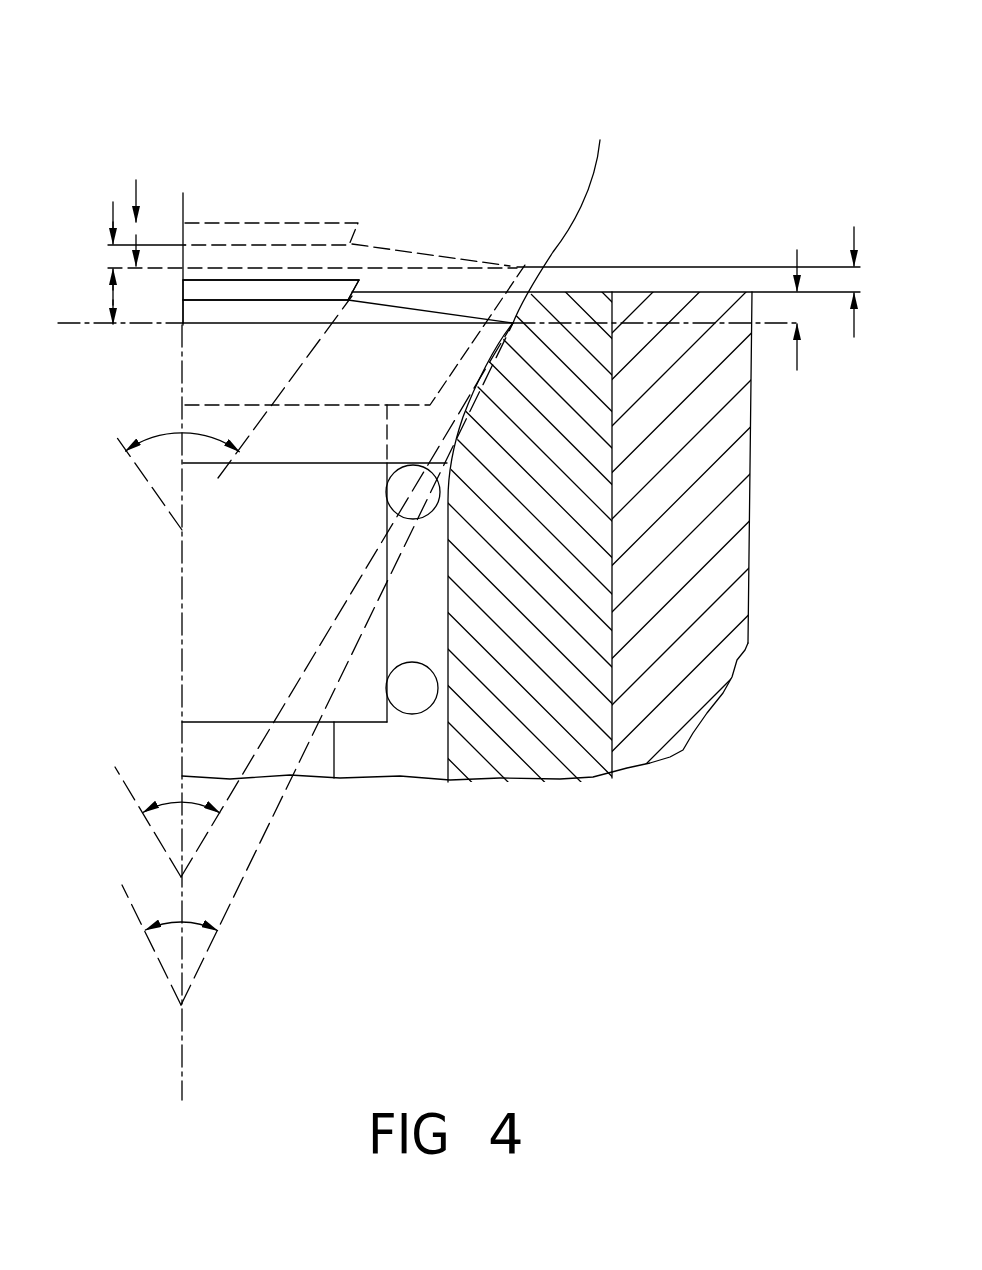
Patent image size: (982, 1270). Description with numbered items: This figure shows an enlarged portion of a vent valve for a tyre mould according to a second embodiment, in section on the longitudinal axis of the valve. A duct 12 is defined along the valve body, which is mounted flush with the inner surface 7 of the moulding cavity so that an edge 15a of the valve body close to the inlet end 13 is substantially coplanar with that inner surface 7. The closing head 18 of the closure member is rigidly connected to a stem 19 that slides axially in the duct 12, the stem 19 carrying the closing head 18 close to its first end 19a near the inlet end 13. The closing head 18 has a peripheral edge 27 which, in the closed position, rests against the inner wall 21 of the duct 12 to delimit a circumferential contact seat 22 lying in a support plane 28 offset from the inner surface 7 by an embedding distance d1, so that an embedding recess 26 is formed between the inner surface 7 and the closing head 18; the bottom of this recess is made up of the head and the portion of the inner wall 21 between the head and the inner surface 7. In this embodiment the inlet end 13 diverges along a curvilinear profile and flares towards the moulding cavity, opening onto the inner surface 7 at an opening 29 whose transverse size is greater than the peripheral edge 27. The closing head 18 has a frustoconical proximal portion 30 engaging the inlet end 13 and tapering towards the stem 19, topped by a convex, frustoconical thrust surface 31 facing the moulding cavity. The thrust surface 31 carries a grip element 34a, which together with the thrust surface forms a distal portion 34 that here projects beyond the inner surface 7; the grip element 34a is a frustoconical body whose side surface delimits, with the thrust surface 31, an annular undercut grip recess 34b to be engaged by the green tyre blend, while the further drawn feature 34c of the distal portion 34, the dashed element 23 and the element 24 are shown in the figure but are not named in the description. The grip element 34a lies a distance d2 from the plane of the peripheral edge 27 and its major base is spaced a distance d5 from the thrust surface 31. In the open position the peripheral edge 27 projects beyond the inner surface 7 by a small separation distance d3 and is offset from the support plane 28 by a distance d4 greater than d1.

The inner surface 7 is at (725, 292).
The duct 12 is at (436, 612).
The inlet end 13 is at (477, 516).
The edge of the valve body 15a is at (605, 292).
The closing head 18 is at (198, 214).
The stem 19 is at (317, 760).
The first end 19a is at (200, 596).
The inner wall of the duct 21 is at (458, 457).
The contact seat 22 is at (513, 323).
The displaced cutting edge position 23 is at (527, 262).
The clamping screw 24 is at (416, 705).
The embedding recess 26 is at (529, 447).
The peripheral edge 27 is at (417, 267).
The support plane 28 is at (128, 327).
The opening 29 is at (537, 300).
The proximal portion 30 is at (487, 375).
The thrust surface 31 is at (399, 247).
The distal portion 34 is at (243, 223).
The grip element 34a is at (217, 221).
The grip recess 34b is at (358, 245).
The lower face of cutting insert 34c is at (197, 255).
The embedding distance d1 is at (800, 308).
The predetermined distance d2 is at (113, 257).
The separation distance d3 is at (854, 280).
The distance d4 is at (113, 300).
The predetermined distance d5 is at (135, 233).